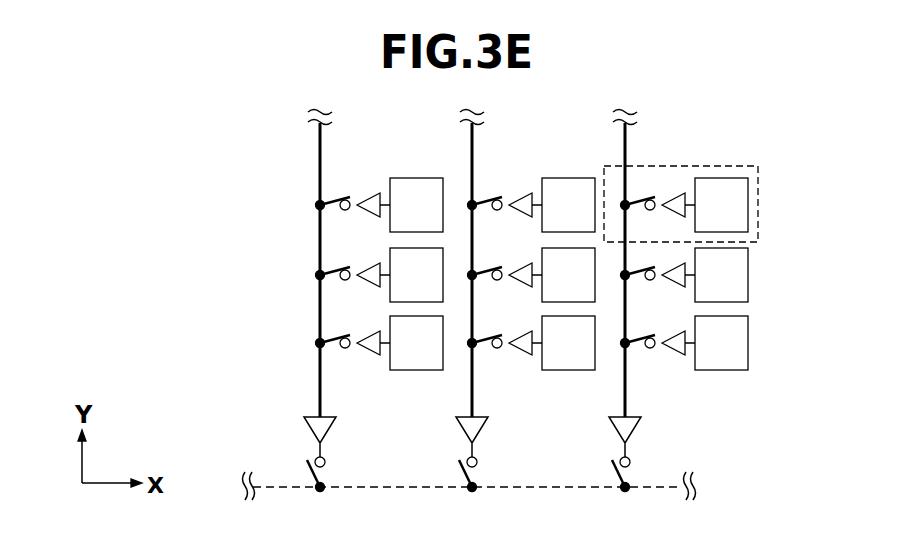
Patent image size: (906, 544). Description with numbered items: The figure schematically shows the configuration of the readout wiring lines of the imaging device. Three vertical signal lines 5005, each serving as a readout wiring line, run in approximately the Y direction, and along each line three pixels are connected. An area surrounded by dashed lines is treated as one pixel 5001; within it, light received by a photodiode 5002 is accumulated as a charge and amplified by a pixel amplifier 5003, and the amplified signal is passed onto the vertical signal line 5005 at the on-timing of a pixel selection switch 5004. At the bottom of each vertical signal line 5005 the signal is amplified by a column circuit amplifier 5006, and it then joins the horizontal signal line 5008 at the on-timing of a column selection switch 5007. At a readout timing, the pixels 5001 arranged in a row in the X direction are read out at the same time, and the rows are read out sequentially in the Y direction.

The pixel 5001 is at (758, 225).
The photodiode 5002 is at (748, 190).
The pixel amplifier 5003 is at (677, 193).
The pixel selection switch 5004 is at (637, 200).
The vertical signal line 5005 is at (625, 141).
The column circuit amplifier 5006 is at (640, 428).
The column selection switch 5007 is at (632, 472).
The horizontal signal line 5008 is at (542, 487).